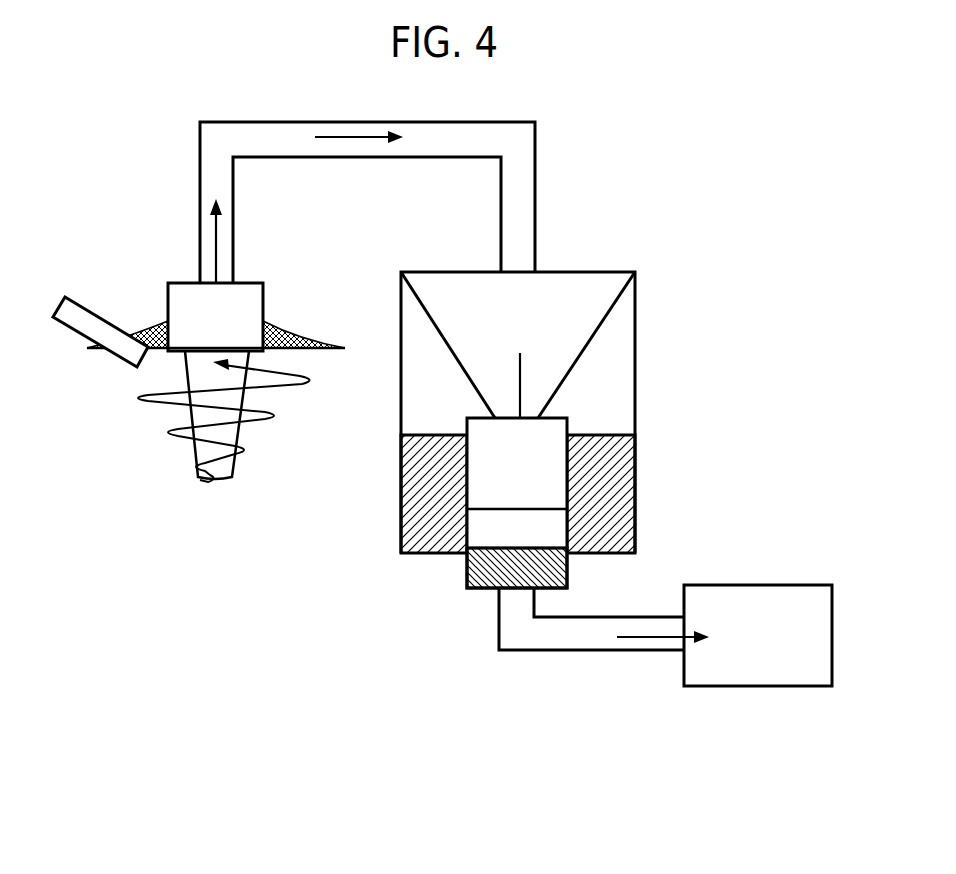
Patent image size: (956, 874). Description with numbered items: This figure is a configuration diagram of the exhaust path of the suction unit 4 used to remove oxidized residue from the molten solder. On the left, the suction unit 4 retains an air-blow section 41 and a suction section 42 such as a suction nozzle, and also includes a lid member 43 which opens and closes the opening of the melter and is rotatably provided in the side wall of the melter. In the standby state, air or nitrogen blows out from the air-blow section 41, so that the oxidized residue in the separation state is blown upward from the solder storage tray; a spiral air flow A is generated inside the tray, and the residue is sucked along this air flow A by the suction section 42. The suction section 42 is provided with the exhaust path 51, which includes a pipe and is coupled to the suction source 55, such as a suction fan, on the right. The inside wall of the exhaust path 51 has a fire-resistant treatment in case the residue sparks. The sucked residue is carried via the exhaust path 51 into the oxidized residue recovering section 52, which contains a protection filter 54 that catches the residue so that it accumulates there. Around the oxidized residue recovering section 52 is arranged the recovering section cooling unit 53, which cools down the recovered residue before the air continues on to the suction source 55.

The suction unit 4 is at (256, 264).
The air-blow section 41 is at (85, 305).
The suction section 42 is at (265, 303).
The lid member 43 is at (330, 350).
The exhaust path 51 is at (536, 177).
The oxidized residue recovering section 52 is at (481, 469).
The recovering section cooling unit 53 is at (635, 498).
The protection filter 54 is at (476, 590).
The suction source 55 is at (764, 688).
The spiral air flow A is at (224, 420).